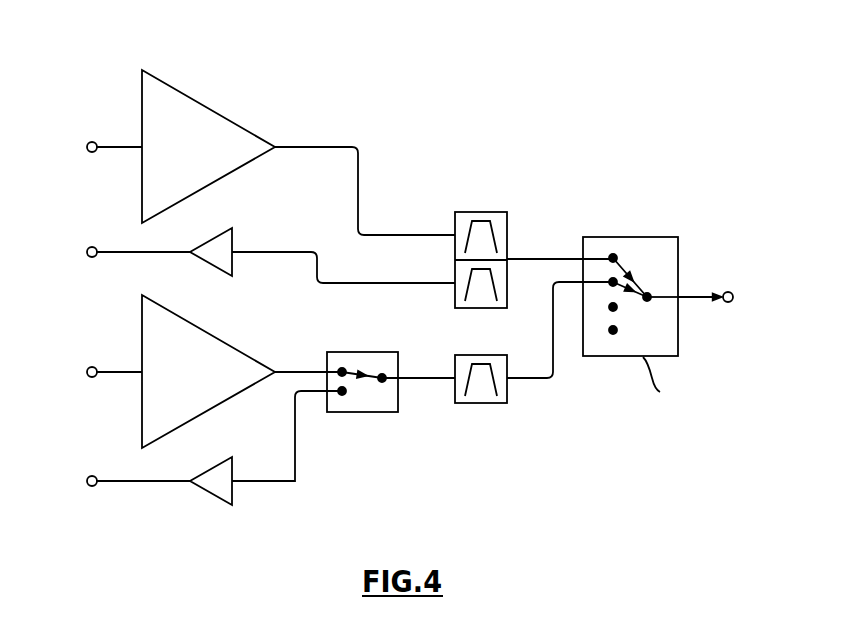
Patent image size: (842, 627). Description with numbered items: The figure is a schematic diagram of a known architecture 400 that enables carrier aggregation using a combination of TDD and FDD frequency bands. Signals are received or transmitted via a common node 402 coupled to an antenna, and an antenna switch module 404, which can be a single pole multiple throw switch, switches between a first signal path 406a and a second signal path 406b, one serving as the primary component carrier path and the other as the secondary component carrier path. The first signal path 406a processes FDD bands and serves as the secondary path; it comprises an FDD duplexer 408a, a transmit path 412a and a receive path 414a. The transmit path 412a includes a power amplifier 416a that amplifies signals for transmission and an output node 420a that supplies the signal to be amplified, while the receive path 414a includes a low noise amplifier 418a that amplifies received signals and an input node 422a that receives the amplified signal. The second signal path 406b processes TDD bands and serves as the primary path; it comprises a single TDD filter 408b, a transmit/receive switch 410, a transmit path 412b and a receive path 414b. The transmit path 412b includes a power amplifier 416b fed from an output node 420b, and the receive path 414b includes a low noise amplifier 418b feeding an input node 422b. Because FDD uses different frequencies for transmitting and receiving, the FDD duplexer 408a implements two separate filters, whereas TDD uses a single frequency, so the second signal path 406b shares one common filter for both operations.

The architecture 400 is at (556, 70).
The common node 402 is at (730, 302).
The antenna switch module 404 is at (657, 237).
The first signal path 406a is at (551, 258).
The second signal path 406b is at (553, 380).
The FDD duplexer 408a is at (454, 228).
The TDD filter 408b is at (475, 355).
The transmit/receive switch 410 is at (368, 352).
The transmit path 412a is at (358, 149).
The transmit path 412b is at (311, 371).
The receive path 414a is at (279, 251).
The receive path 414b is at (295, 481).
The power amplifier 416a is at (216, 111).
The power amplifier 416b is at (216, 337).
The low noise amplifier 418a is at (233, 229).
The low noise amplifier 418b is at (233, 505).
The output node 420a is at (96, 118).
The output node 420b is at (96, 343).
The input node 422a is at (96, 223).
The input node 422b is at (96, 453).